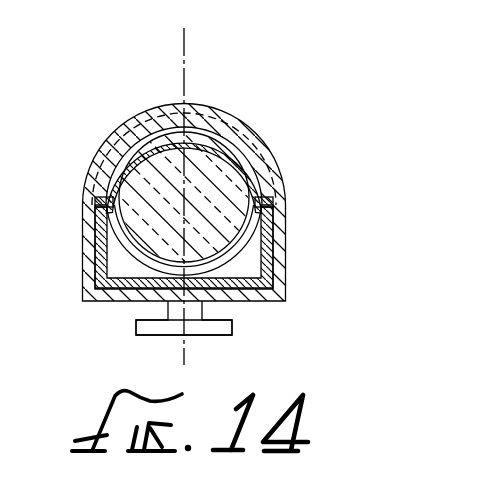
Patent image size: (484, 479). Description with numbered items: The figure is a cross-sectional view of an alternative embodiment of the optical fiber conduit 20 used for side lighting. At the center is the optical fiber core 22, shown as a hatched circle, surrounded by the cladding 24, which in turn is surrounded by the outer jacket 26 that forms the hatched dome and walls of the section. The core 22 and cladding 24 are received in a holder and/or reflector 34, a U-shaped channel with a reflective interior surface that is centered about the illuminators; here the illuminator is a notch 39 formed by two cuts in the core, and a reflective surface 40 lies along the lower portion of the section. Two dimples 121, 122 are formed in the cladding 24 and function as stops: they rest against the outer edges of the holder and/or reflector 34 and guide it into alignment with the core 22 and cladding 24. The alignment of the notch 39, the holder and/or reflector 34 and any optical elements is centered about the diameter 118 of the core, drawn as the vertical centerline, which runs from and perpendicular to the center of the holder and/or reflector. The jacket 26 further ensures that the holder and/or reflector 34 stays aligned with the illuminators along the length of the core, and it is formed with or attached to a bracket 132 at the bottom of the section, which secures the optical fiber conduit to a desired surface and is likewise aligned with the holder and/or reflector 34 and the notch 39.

The optical fiber conduit 20 is at (195, 224).
The optical fiber core 22 is at (208, 162).
The cladding 24 is at (232, 126).
The jacket 26 is at (103, 303).
The holder and/or reflector 34 is at (266, 219).
The notch 39 is at (196, 270).
The reflective surface 40 is at (247, 257).
The diameter 118 is at (185, 38).
The dimple 121 is at (103, 193).
The dimple 122 is at (258, 203).
The bracket 132 is at (232, 335).